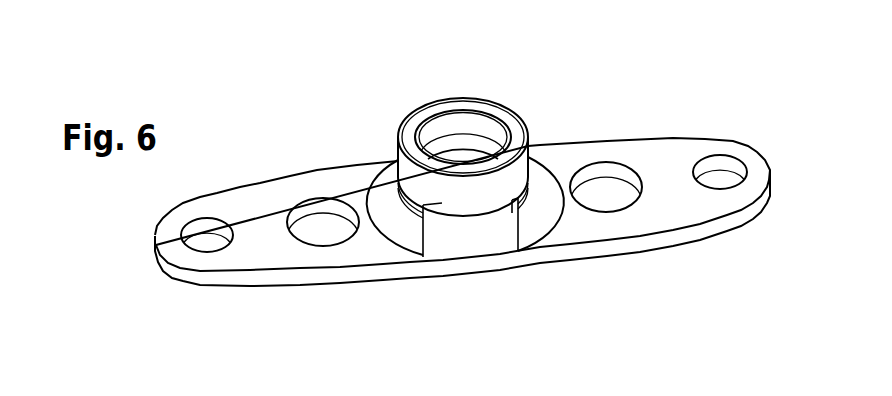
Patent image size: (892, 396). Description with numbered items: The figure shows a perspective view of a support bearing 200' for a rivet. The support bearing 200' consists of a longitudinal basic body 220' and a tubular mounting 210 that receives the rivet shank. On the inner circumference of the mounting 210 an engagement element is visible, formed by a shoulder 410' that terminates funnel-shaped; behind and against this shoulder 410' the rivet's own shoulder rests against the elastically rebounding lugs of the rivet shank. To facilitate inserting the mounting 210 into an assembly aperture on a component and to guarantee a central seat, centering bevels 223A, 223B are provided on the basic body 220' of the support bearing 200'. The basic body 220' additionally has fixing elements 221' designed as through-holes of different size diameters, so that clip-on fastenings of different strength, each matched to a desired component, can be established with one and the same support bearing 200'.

The support bearing 200' is at (462, 171).
The basic body 220' is at (464, 247).
The fixing elements 221' is at (636, 234).
The shoulder 410' is at (463, 94).
The centering bevel 223B is at (536, 100).
The centering bevel 223A is at (486, 225).
The rib 210 is at (442, 197).